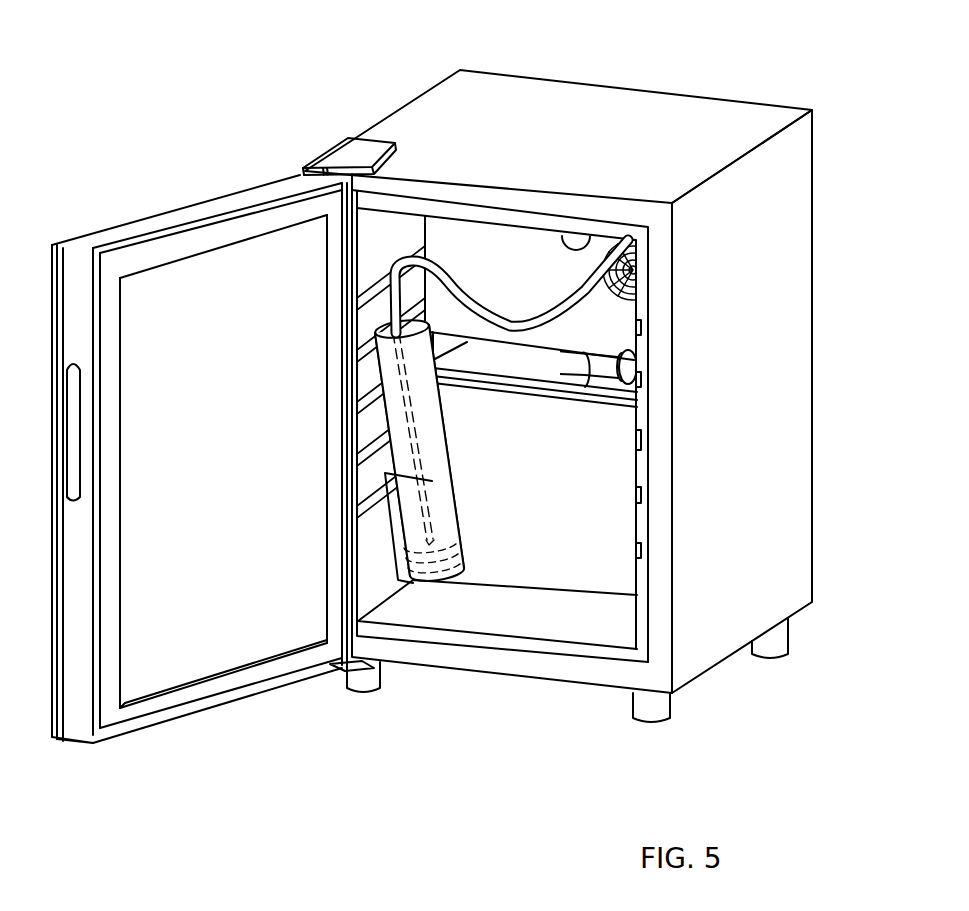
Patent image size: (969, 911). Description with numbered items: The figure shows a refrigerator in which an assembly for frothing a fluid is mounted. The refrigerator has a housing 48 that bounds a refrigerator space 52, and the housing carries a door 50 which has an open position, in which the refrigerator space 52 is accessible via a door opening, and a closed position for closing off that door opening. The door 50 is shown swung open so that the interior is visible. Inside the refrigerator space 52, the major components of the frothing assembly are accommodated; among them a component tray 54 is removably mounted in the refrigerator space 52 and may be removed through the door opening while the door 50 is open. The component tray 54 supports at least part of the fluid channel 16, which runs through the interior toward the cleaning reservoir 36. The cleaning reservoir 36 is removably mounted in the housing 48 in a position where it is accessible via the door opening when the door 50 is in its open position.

The fluid channel 16 is at (500, 313).
The cleaning reservoir 36 is at (435, 439).
The housing 48 is at (593, 110).
The door 50 is at (182, 665).
The refrigerator space 52 is at (563, 540).
The component tray 54 is at (608, 334).